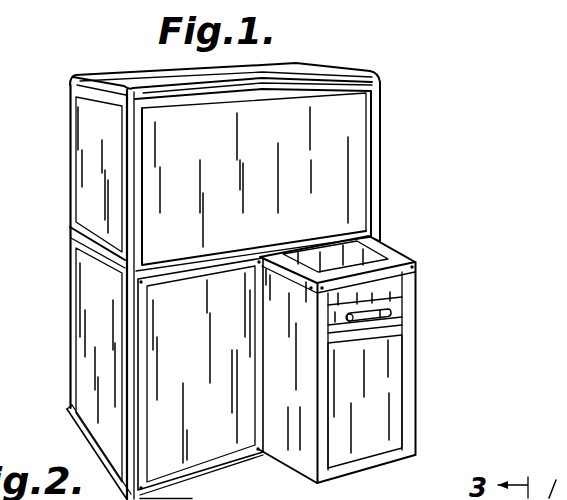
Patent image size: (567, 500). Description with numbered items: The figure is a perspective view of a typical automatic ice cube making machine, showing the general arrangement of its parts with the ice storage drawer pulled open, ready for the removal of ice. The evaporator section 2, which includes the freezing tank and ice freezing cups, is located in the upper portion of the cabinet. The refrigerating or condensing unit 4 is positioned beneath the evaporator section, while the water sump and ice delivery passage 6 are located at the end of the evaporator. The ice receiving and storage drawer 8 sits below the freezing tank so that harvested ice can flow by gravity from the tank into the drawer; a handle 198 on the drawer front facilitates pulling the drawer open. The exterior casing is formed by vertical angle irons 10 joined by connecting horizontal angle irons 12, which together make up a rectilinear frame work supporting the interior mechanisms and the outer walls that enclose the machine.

The evaporator section 2 is at (167, 190).
The refrigerating or condensing unit 4 is at (157, 363).
The water sump and ice delivery passage 6 is at (333, 155).
The ice receiving and storage drawer 8 is at (387, 355).
The vertical angle irons 10 is at (381, 200).
The horizontal angle irons 12 is at (105, 104).
The handle 198 is at (406, 313).